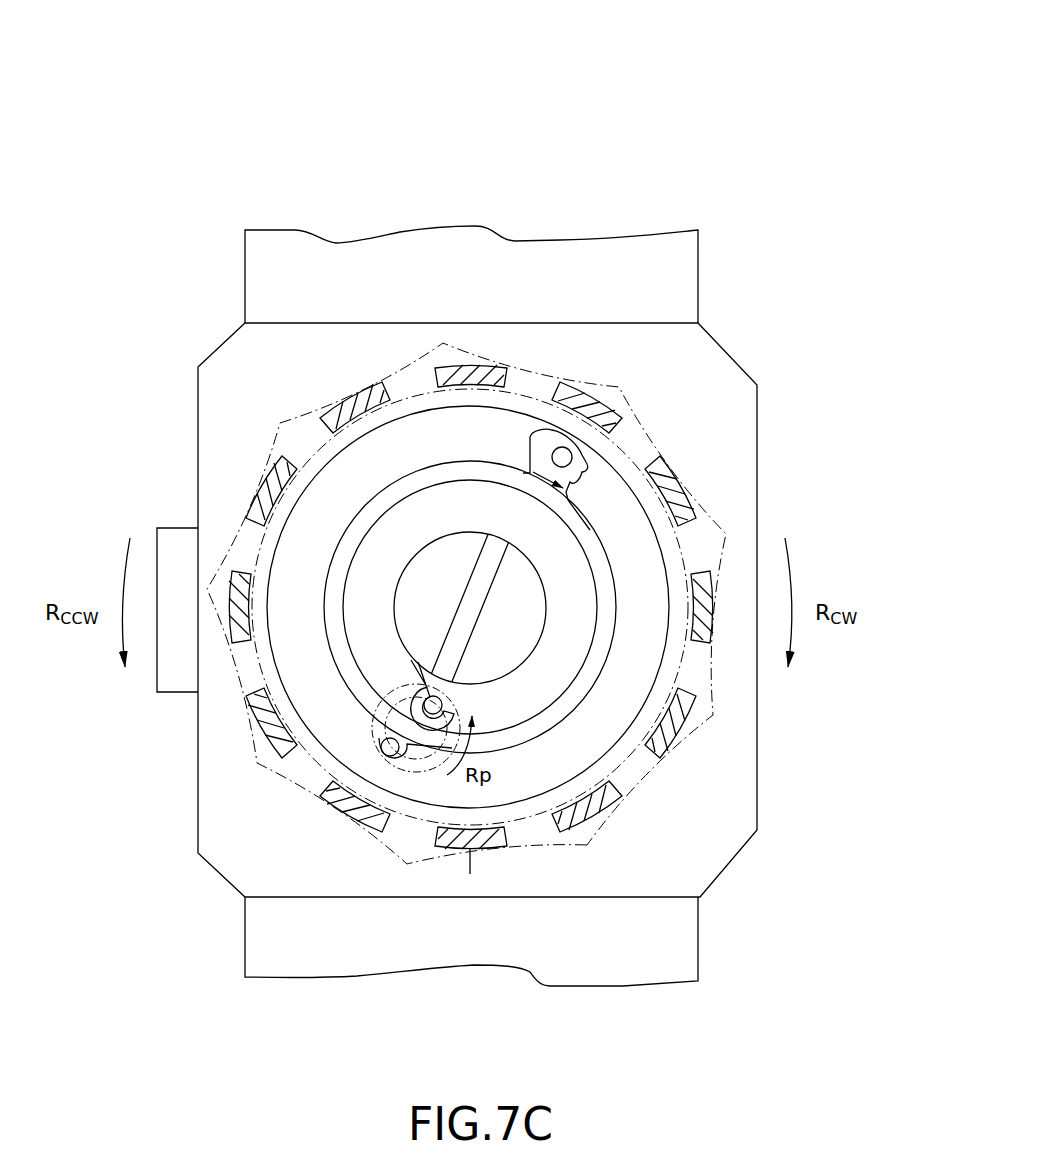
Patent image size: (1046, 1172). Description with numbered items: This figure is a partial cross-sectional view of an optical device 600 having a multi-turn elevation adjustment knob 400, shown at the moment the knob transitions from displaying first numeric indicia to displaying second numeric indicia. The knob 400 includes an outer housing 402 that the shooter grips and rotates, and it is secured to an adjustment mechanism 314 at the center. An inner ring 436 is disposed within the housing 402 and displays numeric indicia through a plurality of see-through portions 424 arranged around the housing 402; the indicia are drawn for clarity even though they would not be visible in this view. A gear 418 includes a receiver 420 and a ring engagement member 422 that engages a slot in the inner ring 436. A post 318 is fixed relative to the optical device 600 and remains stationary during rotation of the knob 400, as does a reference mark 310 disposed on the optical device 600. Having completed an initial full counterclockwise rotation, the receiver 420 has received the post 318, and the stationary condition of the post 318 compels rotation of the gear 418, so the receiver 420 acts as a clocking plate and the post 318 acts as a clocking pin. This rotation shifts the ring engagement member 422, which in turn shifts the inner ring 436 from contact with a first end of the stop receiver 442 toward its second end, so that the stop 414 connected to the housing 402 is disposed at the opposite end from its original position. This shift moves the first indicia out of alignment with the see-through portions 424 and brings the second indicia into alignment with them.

The optical device 600 is at (638, 155).
The multi-turn elevation adjustment knob 400 is at (800, 348).
The stop receiver 442 is at (594, 464).
The adjustment mechanism 314 is at (435, 563).
The stop 414 is at (533, 452).
The inner ring 436 is at (628, 586).
The receiver 420 is at (420, 690).
The gear 418 is at (382, 704).
The ring engagement member 422 is at (383, 747).
The post 318 is at (447, 703).
The see-through portions 424 is at (707, 672).
The outer housing 402 is at (658, 790).
The reference mark 310 is at (468, 876).